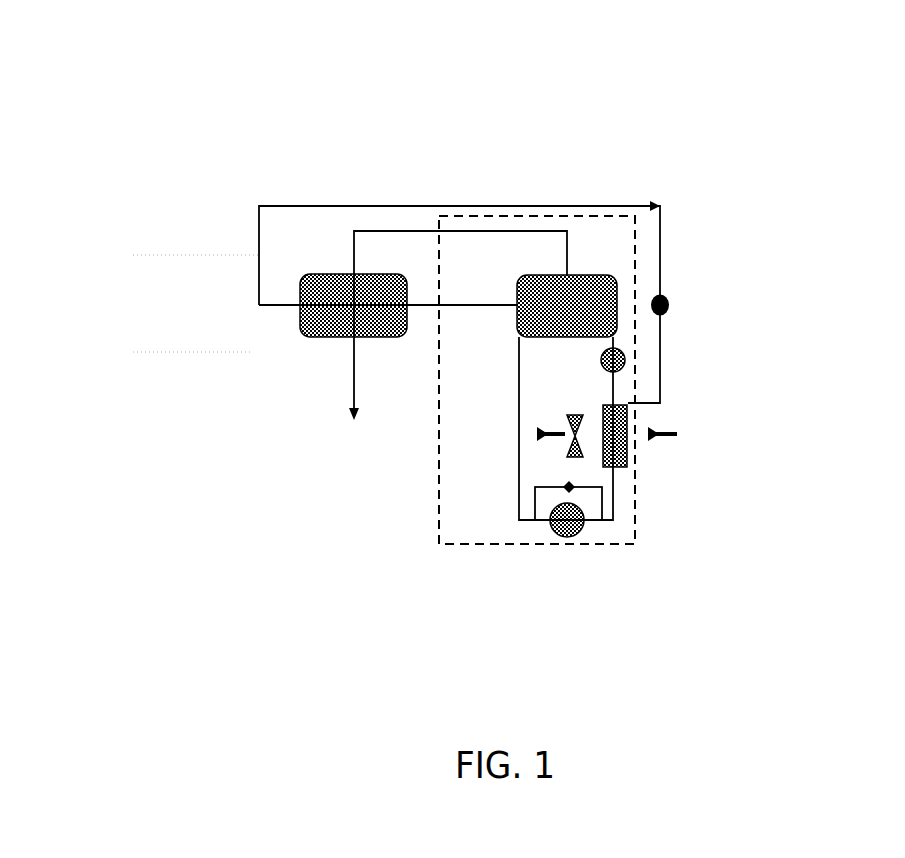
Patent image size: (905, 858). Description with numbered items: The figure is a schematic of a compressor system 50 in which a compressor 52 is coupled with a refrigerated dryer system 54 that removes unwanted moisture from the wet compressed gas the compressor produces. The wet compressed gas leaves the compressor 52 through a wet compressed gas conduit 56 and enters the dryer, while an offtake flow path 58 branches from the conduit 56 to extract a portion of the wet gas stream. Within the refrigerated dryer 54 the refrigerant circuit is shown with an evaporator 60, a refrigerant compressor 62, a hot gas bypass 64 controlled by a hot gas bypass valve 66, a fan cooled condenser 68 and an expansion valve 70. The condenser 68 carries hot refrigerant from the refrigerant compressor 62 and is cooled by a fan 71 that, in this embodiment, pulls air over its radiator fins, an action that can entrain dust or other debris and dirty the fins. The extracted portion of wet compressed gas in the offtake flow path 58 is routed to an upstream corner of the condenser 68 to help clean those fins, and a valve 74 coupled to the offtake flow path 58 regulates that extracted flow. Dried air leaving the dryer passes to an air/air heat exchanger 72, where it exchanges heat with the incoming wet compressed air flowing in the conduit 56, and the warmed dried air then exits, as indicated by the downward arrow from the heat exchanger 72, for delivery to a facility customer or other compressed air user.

The compressor system 50 is at (165, 108).
The compressor 52 is at (152, 353).
The refrigerated dryer system 54 is at (438, 520).
The wet compressed gas conduit 56 is at (272, 307).
The offtake flow path 58 is at (275, 206).
The evaporator 60 is at (578, 275).
The refrigerant compressor 62 is at (577, 533).
The hot gas bypass 64 is at (535, 503).
The hot gas bypass valve 66 is at (569, 487).
The fan cooled condenser 68 is at (628, 437).
The expansion valve 70 is at (628, 360).
The fan 71 is at (582, 453).
The air/air heat exchanger 72 is at (340, 335).
The valve 74 is at (672, 305).